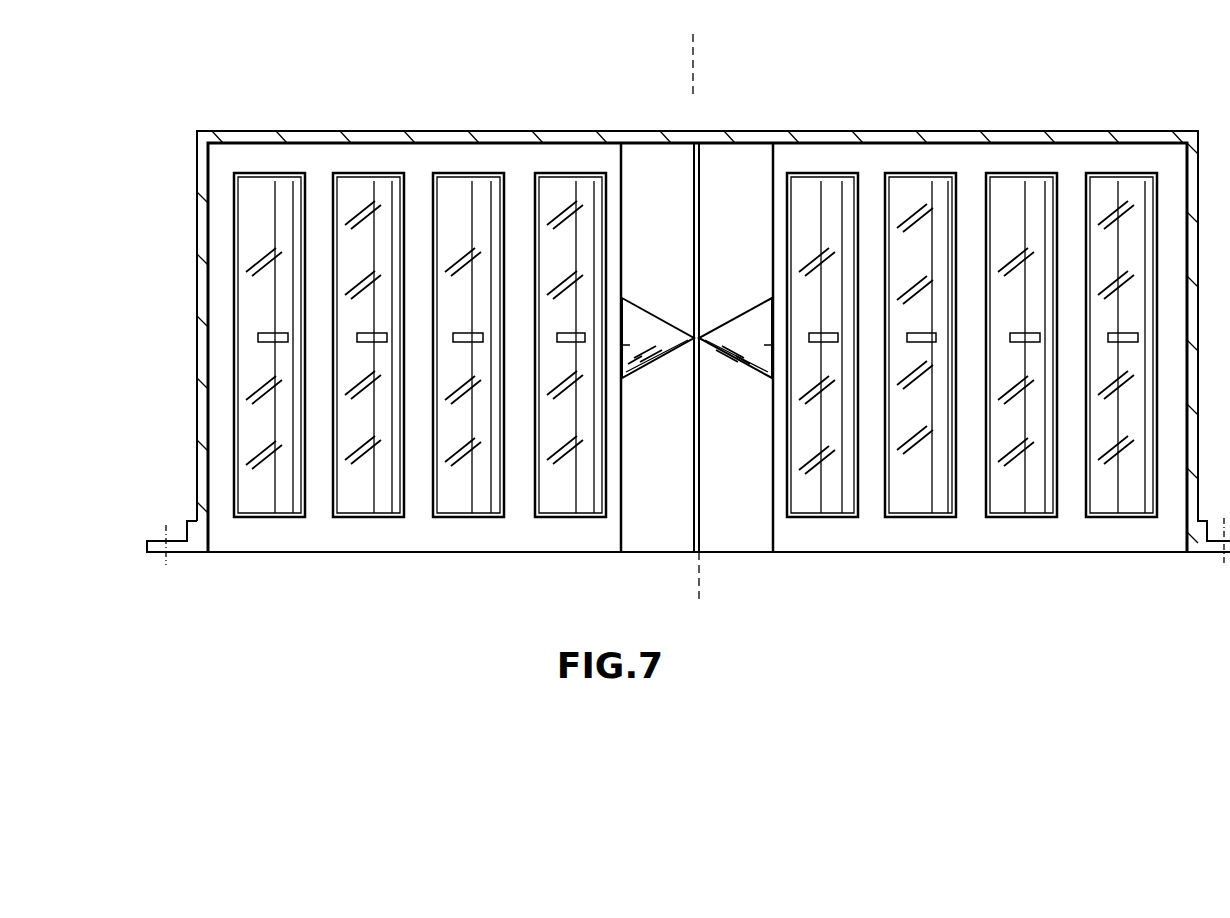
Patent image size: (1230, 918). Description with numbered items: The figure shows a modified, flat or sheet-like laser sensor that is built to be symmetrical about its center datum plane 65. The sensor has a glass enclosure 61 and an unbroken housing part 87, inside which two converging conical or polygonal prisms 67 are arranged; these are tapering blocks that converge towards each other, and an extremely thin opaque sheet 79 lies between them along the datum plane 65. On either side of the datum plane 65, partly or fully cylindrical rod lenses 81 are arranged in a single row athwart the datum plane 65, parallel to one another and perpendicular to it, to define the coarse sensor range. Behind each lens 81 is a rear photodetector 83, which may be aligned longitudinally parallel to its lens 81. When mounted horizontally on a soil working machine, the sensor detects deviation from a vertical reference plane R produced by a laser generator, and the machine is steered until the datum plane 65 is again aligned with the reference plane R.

The glass enclosure 61 is at (340, 133).
The housing part 87 is at (492, 157).
The opaque sheet 79 is at (697, 165).
The reference plane R is at (690, 67).
The center datum plane 65 is at (709, 583).
The conical or polygonal prisms 67 is at (655, 322).
The partly or fully cylindrical lenses 81 is at (270, 515).
The rear photodetector 83 is at (357, 338).